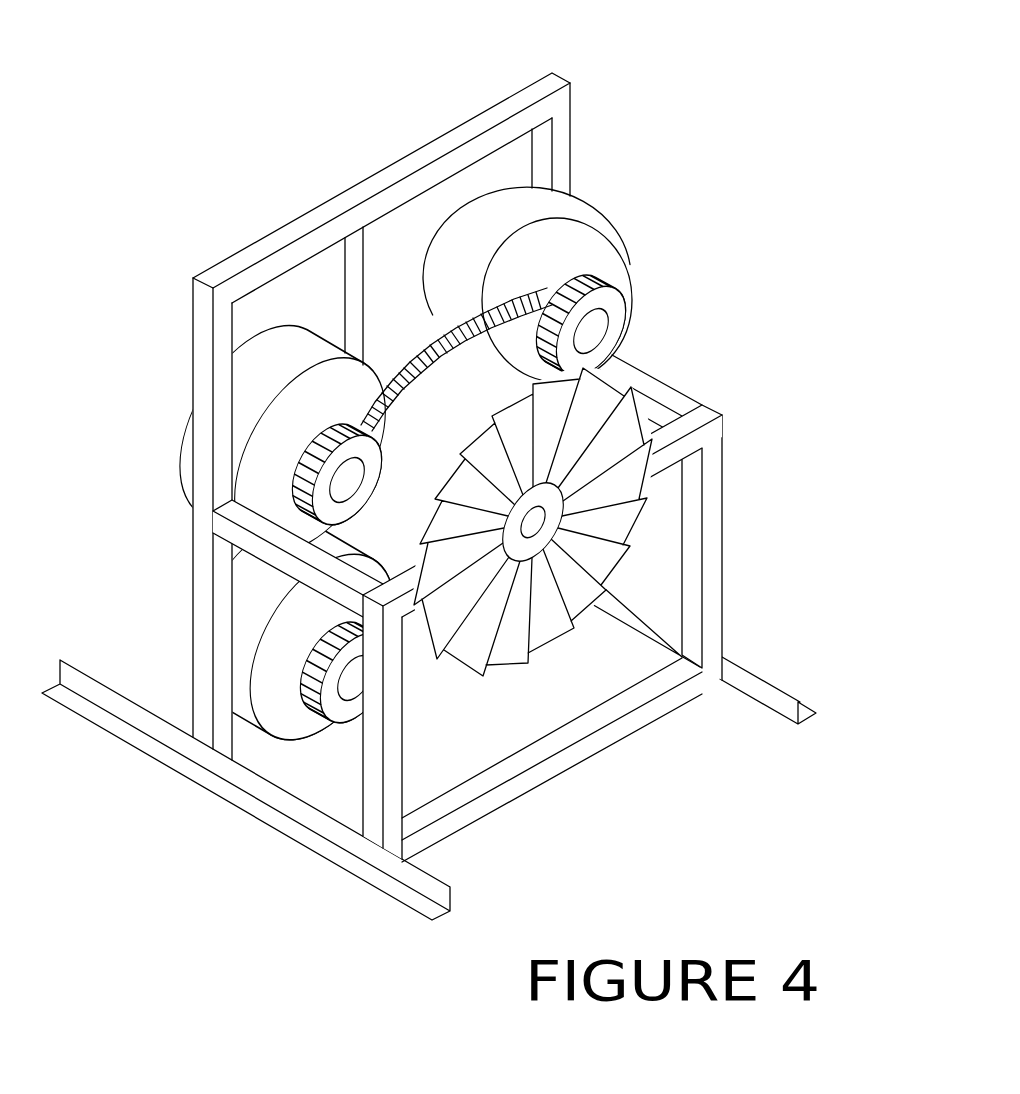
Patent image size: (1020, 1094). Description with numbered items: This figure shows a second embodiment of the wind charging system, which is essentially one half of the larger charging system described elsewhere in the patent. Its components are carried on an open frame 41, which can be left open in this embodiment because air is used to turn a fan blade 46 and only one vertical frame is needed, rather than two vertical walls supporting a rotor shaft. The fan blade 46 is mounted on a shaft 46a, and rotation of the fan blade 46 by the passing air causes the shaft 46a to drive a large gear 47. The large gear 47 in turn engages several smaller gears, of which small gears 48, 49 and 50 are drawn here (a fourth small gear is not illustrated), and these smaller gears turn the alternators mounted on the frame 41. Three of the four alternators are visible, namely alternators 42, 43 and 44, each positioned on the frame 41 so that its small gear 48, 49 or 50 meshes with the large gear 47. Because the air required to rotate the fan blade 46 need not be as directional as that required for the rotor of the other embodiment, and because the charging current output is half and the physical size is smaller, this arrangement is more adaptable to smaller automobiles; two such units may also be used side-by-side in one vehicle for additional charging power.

The open frame 41 is at (380, 185).
The alternator 42 is at (182, 437).
The alternator 43 is at (287, 705).
The alternator 44 is at (552, 213).
The fan blade 46 is at (553, 625).
The shaft 46a is at (540, 530).
The large gear 47 is at (543, 353).
The small gear 48 is at (605, 298).
The small gear 49 is at (300, 483).
The small gear 50 is at (343, 700).